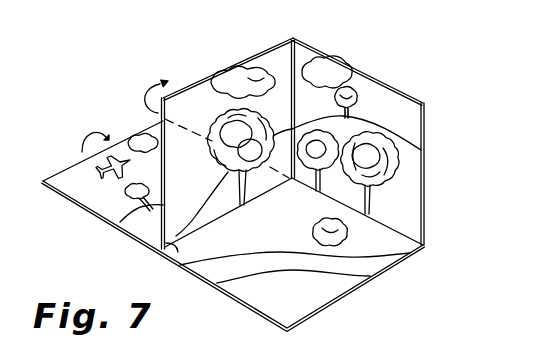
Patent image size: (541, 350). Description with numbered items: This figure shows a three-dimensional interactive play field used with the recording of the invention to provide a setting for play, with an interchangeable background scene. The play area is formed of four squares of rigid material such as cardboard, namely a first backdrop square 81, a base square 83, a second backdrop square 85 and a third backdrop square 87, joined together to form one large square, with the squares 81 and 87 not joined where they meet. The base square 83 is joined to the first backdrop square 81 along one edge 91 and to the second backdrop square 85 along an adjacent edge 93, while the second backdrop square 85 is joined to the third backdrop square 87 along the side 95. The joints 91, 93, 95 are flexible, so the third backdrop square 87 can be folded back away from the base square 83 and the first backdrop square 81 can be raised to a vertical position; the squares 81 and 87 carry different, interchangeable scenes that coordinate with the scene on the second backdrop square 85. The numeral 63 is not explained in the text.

The folding scene display 63 is at (433, 165).
The first backdrop square 81 is at (92, 195).
The base square 83 is at (313, 297).
The second backdrop square 85 is at (397, 108).
The third backdrop square 87 is at (194, 100).
The edge joint between base square and first backdrop square 91 is at (175, 254).
The edge joint between base square and second backdrop square 93 is at (400, 231).
The side joint between second and third backdrop squares 95 is at (298, 56).